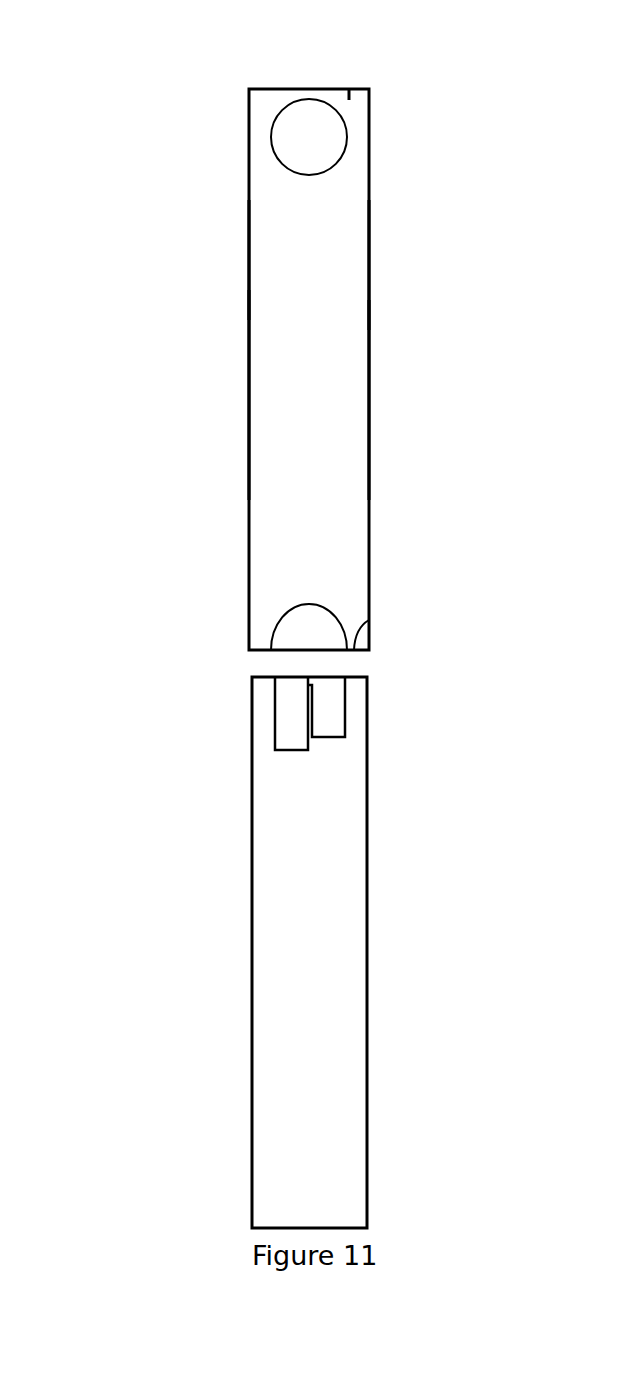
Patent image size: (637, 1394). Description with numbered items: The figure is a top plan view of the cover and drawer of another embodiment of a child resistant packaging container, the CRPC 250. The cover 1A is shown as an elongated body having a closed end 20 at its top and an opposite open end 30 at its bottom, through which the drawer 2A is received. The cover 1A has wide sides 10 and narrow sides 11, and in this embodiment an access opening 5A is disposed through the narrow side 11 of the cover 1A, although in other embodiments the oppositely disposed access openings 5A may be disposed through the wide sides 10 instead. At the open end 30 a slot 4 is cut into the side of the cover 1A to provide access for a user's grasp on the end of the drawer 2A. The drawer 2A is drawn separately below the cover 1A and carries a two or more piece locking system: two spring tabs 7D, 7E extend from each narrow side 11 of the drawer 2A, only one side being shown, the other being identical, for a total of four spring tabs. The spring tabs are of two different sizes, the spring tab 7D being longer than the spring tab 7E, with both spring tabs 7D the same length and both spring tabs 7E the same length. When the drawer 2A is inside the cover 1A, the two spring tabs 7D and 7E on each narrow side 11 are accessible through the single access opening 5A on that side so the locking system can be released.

The CRPC 250 is at (136, 581).
The cover 1A is at (328, 370).
The drawer 2A is at (328, 933).
The access opening 5A is at (326, 149).
The narrow side 11 is at (326, 442).
The wide side 10 is at (248, 302).
The closed end 20 is at (349, 89).
The open end 30 is at (369, 620).
The slot 4 is at (313, 630).
The spring tab 7D is at (290, 723).
The spring tab 7E is at (332, 722).